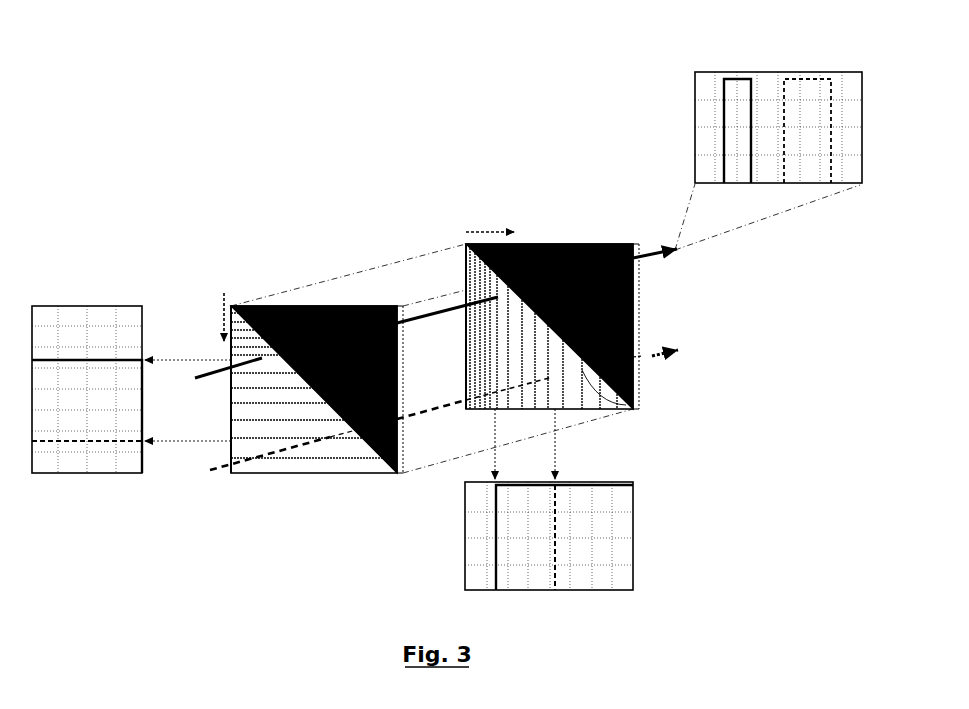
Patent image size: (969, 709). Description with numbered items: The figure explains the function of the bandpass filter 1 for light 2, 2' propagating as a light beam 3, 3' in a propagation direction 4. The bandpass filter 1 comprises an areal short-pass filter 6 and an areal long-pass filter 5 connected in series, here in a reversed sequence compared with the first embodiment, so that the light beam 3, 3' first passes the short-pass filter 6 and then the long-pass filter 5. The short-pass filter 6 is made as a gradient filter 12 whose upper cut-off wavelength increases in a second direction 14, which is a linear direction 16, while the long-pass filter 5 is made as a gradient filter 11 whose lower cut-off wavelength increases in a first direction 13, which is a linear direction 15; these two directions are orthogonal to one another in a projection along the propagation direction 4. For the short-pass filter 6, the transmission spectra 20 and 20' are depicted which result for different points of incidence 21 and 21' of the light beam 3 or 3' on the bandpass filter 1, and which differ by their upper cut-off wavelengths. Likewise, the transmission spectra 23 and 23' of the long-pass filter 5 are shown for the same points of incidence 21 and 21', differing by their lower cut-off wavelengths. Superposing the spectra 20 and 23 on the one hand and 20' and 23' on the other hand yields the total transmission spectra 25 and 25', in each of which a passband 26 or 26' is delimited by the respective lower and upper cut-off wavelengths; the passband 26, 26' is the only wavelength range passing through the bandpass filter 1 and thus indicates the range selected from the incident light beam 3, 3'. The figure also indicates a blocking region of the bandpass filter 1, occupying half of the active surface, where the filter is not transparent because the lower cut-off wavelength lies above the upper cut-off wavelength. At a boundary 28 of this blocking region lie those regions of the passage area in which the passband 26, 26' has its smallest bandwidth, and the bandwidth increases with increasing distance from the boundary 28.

The bandpass filter 1 is at (588, 124).
The light 2 is at (215, 336).
The light beam 3 is at (215, 336).
The light 2' is at (270, 500).
The light beam 3' is at (270, 500).
The propagation direction 4 is at (665, 258).
The long-pass filter 5 is at (599, 285).
The gradient filter 11 is at (599, 285).
The short-pass filter 6 is at (317, 341).
The gradient filter 12 is at (317, 341).
The first direction 13 is at (486, 280).
The linear direction 15 is at (488, 228).
The second direction 14 is at (201, 341).
The linear direction 16 is at (222, 318).
The transmission spectrum 20 is at (77, 387).
The transmission spectrum 20' is at (87, 502).
The point of incidence 21 is at (398, 430).
The point of incidence 21' is at (459, 470).
The transmission spectrum 23 is at (539, 549).
The transmission spectrum 23' is at (630, 537).
The total transmission spectrum 25 is at (774, 140).
The total transmission spectrum 25' is at (852, 131).
The passband 26 is at (774, 108).
The passband 26' is at (852, 94).
The boundary 28 is at (633, 405).